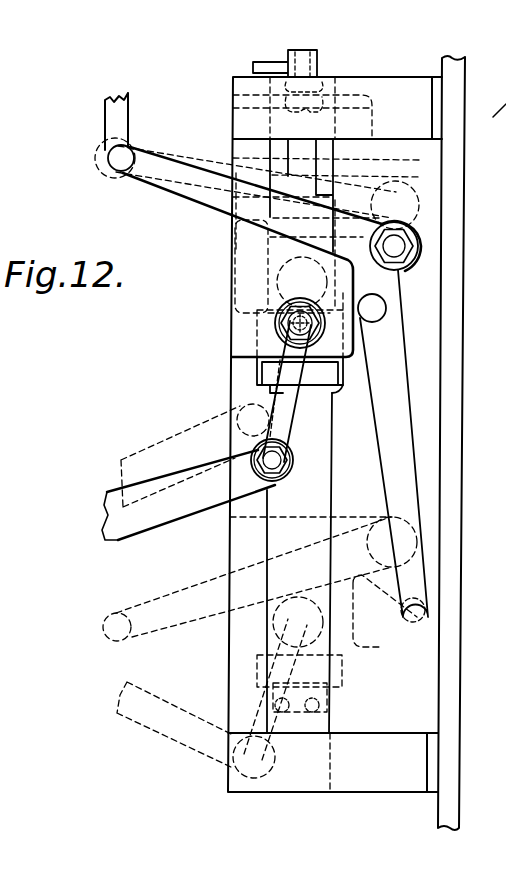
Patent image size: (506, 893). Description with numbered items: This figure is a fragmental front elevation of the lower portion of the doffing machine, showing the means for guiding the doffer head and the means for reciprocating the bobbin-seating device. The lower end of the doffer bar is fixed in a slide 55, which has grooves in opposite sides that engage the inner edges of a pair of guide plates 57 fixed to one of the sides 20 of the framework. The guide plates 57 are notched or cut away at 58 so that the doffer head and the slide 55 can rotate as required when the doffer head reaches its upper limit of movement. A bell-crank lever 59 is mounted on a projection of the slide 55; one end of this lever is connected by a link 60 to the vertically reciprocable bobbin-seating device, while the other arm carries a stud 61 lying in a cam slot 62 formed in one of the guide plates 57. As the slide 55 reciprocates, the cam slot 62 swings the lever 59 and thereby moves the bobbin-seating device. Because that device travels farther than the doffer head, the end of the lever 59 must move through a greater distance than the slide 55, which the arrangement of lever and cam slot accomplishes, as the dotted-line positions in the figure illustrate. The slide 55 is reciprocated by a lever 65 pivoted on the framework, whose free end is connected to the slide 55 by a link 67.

The side 20 is at (452, 283).
The slide 55 is at (356, 640).
The guide plate 57 is at (475, 347).
The notch 58 is at (343, 388).
The bell-crank lever 59 is at (192, 583).
The link 60 is at (120, 128).
The stud 61 is at (376, 322).
The cam slot 62 is at (382, 403).
The lever 65 is at (148, 732).
The link 67 is at (233, 693).